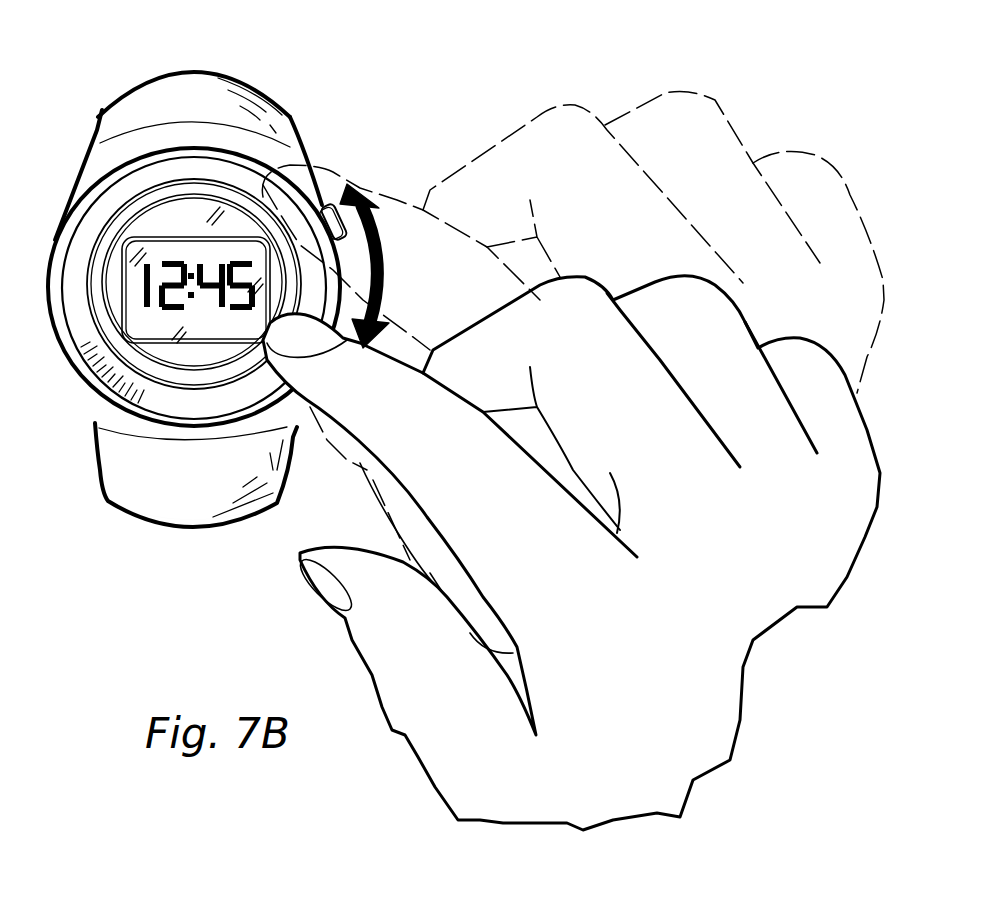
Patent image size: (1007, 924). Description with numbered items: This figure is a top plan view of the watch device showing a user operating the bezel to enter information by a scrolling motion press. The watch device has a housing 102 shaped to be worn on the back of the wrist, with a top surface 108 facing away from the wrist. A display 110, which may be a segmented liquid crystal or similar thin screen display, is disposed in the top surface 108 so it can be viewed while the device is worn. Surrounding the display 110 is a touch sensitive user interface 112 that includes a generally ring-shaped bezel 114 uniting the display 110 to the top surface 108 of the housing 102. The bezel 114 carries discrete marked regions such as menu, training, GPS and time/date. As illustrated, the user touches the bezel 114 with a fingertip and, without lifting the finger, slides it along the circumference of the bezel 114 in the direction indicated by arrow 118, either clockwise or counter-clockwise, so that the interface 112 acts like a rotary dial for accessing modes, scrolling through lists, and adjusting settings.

The housing 102 is at (73, 376).
The top surface 108 is at (130, 150).
The display 110 is at (220, 347).
The touch sensitive user interface 112 is at (70, 227).
The bezel 114 is at (102, 472).
The arrow 118 is at (383, 262).